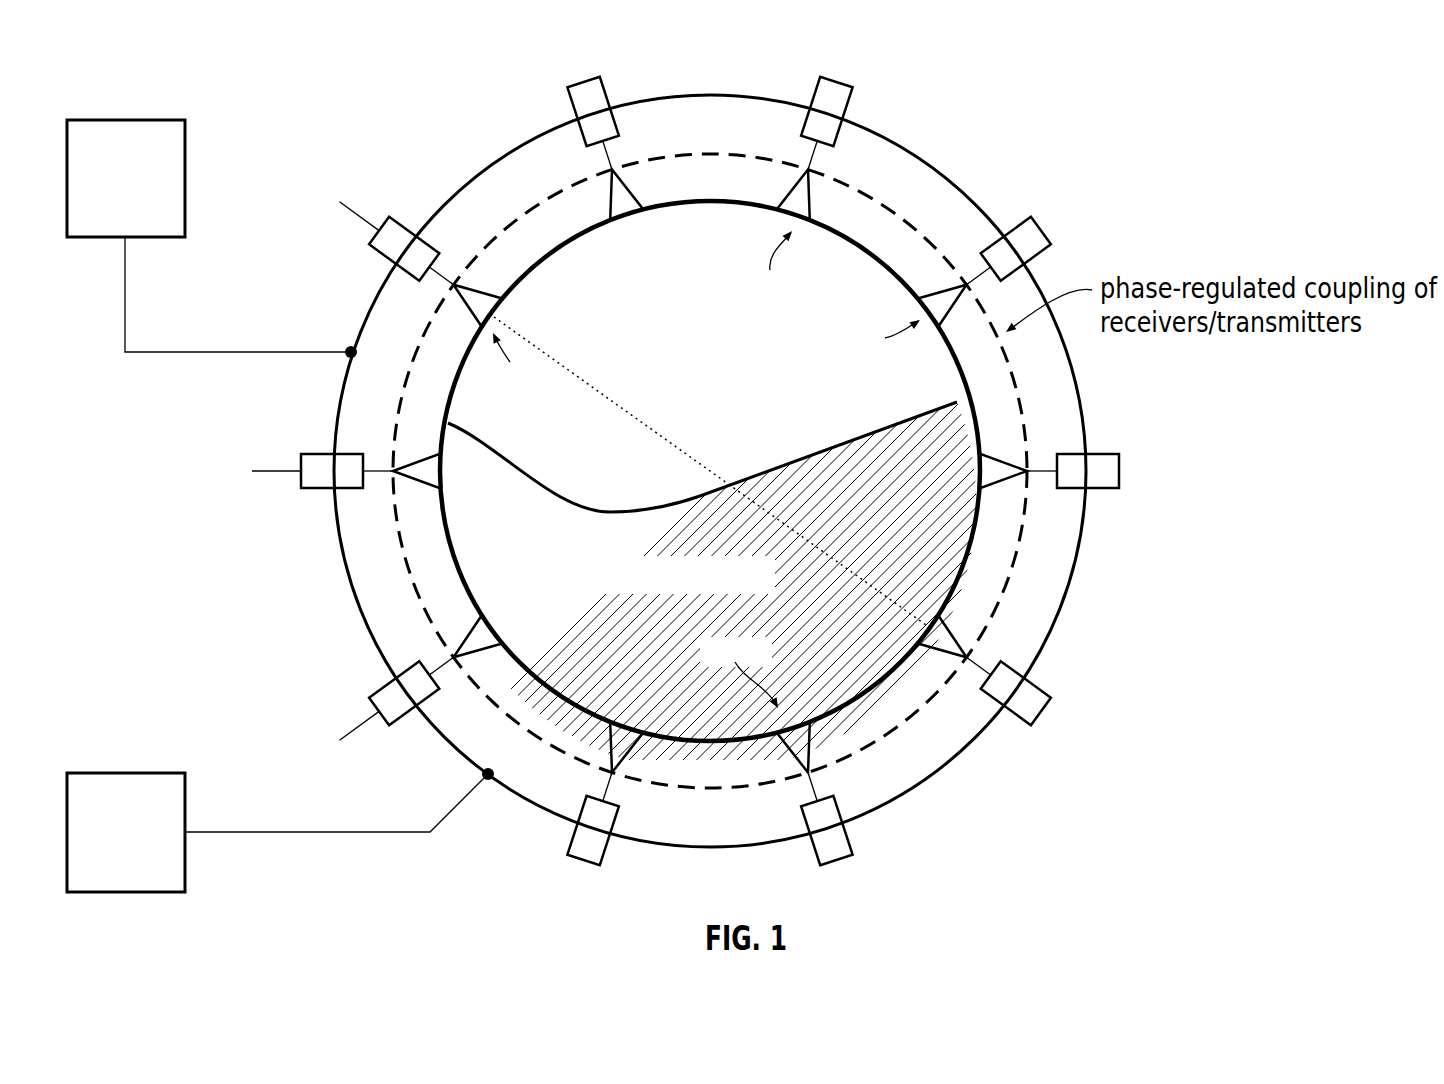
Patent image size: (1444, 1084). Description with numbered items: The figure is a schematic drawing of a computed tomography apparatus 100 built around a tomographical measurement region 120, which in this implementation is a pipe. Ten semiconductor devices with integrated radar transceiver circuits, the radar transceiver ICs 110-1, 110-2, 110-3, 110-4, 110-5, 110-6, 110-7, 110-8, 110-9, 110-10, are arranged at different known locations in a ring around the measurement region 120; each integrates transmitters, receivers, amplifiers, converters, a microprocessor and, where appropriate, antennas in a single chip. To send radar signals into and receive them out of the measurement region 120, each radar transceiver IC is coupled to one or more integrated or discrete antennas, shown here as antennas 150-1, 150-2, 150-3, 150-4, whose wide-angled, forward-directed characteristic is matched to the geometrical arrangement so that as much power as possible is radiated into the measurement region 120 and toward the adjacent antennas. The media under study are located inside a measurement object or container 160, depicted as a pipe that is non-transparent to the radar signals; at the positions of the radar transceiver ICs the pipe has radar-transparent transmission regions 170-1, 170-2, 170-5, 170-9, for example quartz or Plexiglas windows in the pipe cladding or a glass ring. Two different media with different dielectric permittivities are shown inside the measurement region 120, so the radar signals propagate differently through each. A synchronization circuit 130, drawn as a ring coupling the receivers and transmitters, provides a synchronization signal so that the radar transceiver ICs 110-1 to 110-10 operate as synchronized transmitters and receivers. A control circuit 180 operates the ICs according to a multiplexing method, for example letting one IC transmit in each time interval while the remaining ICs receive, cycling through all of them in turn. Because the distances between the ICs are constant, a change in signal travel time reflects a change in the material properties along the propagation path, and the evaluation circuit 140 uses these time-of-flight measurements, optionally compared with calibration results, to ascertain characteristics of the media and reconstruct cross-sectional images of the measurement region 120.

The tomography apparatus 100 is at (1099, 108).
The radar transceiver IC 110-1 is at (840, 84).
The radar transceiver IC 110-2 is at (1047, 233).
The radar transceiver IC 110-3 is at (1119, 470).
The radar transceiver IC 110-4 is at (1044, 712).
The radar transceiver IC 110-5 is at (838, 860).
The radar transceiver IC 110-6 is at (582, 862).
The radar transceiver IC 110-7 is at (371, 699).
The radar transceiver IC 110-8 is at (300, 478).
The radar transceiver IC 110-9 is at (374, 236).
The radar transceiver IC 110-10 is at (585, 85).
The measurement region 120 is at (714, 458).
The synchronization circuit 130 is at (1015, 555).
The evaluation circuit 140 is at (148, 193).
The antenna 150-1 is at (789, 195).
The antenna 150-2 is at (935, 290).
The antenna 150-3 is at (1003, 460).
The antenna 150-4 is at (957, 626).
The container 160 is at (863, 250).
The transmission region 170-1 is at (771, 269).
The transmission region 170-2 is at (869, 338).
The transmission region 170-5 is at (740, 670).
The transmission region 170-9 is at (511, 371).
The control circuit 180 is at (148, 847).